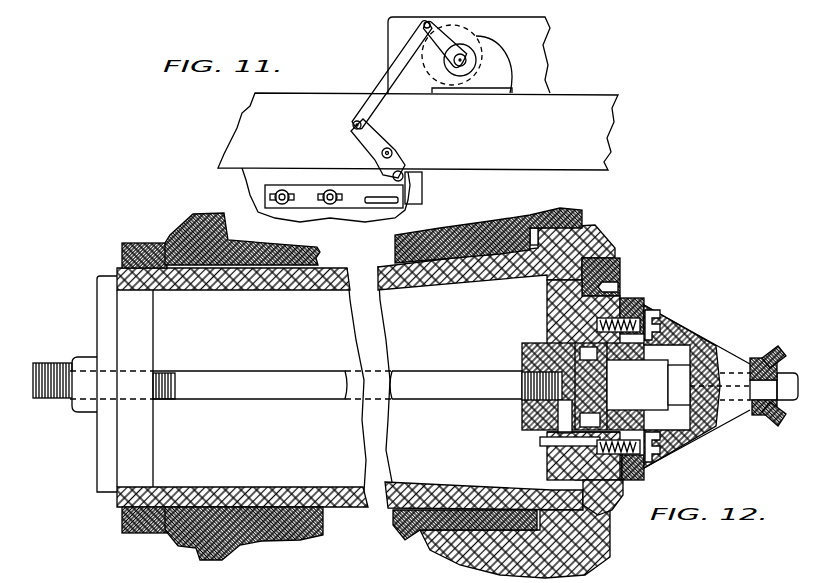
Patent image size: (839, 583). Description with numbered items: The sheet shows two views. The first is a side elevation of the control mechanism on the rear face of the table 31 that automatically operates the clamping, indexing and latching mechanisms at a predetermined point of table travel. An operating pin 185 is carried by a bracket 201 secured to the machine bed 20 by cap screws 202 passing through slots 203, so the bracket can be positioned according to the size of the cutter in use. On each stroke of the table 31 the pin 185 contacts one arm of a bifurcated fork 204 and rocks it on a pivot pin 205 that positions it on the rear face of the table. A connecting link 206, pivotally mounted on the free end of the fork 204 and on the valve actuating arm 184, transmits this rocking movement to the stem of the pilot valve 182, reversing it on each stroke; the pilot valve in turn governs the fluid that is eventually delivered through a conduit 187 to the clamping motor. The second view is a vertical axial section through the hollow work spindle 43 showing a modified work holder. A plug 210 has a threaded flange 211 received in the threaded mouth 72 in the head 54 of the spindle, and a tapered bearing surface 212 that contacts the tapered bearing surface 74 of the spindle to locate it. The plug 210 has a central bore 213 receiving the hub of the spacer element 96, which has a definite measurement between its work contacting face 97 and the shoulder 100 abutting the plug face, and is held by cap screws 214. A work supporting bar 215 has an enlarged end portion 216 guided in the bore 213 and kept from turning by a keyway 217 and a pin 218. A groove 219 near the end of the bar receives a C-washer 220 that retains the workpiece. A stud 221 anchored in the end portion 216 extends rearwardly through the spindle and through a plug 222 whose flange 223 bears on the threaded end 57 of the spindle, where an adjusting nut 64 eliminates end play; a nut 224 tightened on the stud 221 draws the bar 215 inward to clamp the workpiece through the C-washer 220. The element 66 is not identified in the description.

In FIG. 11, the table 31 is at (575, 100).
In FIG. 11, the connecting link 206 is at (384, 87).
In FIG. 11, the arm 184 is at (428, 52).
In FIG. 11, the pilot valve 182 is at (487, 91).
In FIG. 11, the bifurcated fork 204 is at (380, 130).
In FIG. 11, the pivot pin 205 is at (396, 154).
In FIG. 11, the operating pin 185 is at (420, 179).
In FIG. 11, the machine bed 20 is at (246, 185).
In FIG. 11, the bracket 201 is at (270, 188).
In FIG. 11, the cap screws 202 is at (335, 192).
In FIG. 11, the slots 203 is at (292, 197).
In FIG. 12, the hollow work spindle 43 is at (345, 335).
In FIG. 12, the threaded end 57 is at (122, 273).
In FIG. 12, the adjusting nut 64 is at (131, 243).
In FIG. 12, the housing wall 66 is at (175, 233).
In FIG. 12, the flange 223 is at (100, 298).
In FIG. 12, the nut 224 is at (79, 410).
In FIG. 12, the plug 222 is at (158, 427).
In FIG. 12, the stud 221 is at (328, 378).
In FIG. 12, the tapered bearing surface 74 is at (500, 291).
In FIG. 12, the head 54 is at (592, 233).
In FIG. 12, the threaded flange 211 is at (603, 525).
In FIG. 12, the internally threaded mouth 72 is at (612, 258).
In FIG. 12, the tapered bearing surface 212 is at (548, 275).
In FIG. 12, the shoulder 100 is at (630, 298).
In FIG. 12, the central bore 213 is at (598, 362).
In FIG. 12, the spacer element 96 is at (700, 345).
In FIG. 12, the work supporting element or bar 215 is at (648, 385).
In FIG. 12, the enlarged end portion 216 is at (548, 427).
In FIG. 12, the pin 218 is at (562, 437).
In FIG. 12, the keyway 217 is at (562, 458).
In FIG. 12, the cap screws 214 is at (650, 322).
In FIG. 12, the work contacting face 97 is at (752, 355).
In FIG. 12, the groove 219 is at (762, 420).
In FIG. 12, the C-washer 220 is at (782, 418).
In FIG. 12, the plug 210 is at (622, 498).
In FIG. 12, the conduit 187 is at (344, 581).